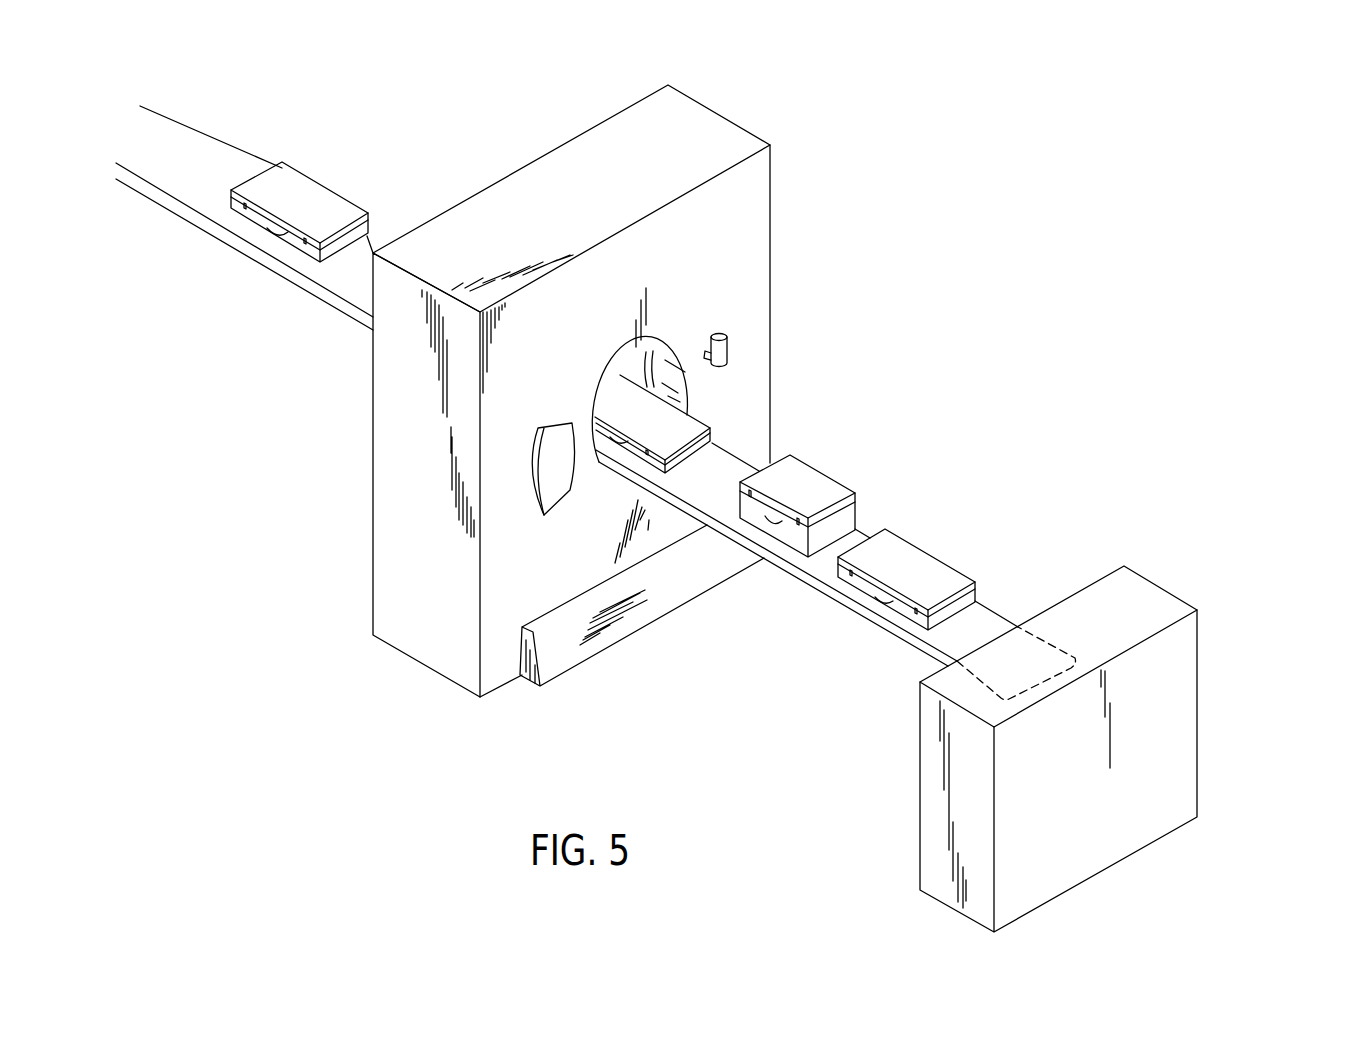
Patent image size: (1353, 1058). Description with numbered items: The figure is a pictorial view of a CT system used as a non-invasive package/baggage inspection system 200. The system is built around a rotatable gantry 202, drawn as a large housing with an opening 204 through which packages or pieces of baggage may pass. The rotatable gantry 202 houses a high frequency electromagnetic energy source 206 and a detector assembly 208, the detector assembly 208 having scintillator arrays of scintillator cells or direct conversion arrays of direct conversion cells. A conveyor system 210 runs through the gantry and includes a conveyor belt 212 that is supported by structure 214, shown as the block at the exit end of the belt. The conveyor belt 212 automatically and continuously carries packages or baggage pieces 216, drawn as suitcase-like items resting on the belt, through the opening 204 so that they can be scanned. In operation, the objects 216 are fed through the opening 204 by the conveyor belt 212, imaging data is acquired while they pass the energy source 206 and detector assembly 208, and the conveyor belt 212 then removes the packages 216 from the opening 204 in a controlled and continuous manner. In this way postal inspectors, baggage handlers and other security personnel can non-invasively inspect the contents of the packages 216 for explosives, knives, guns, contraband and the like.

The package/baggage inspection system 200 is at (918, 418).
The rotatable gantry 202 is at (740, 247).
The opening 204 is at (665, 355).
The high frequency electromagnetic energy source 206 is at (728, 345).
The detector assembly 208 is at (557, 443).
The conveyor system 210 is at (140, 243).
The conveyor belt 212 is at (348, 275).
The structure 214 is at (1197, 684).
The packages or baggage pieces 216 is at (305, 202).